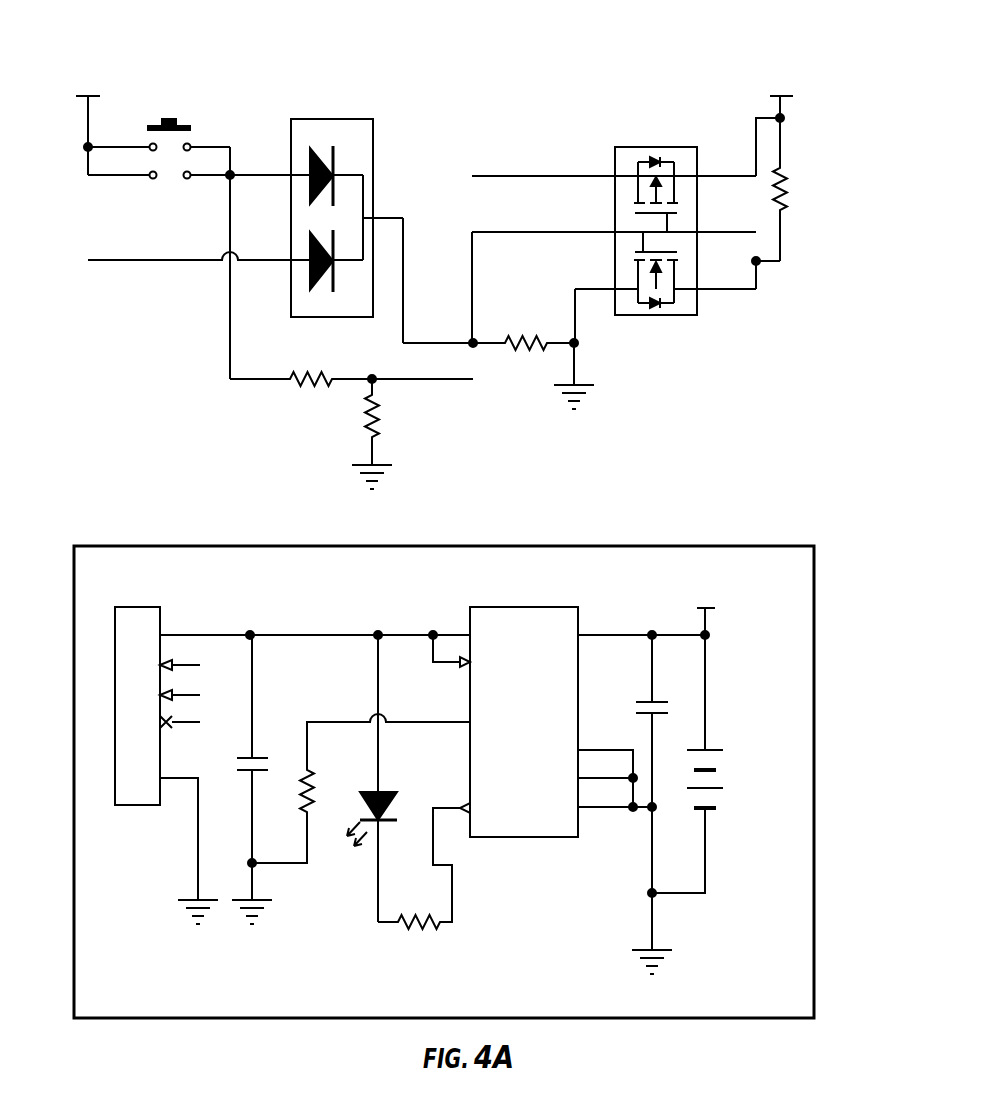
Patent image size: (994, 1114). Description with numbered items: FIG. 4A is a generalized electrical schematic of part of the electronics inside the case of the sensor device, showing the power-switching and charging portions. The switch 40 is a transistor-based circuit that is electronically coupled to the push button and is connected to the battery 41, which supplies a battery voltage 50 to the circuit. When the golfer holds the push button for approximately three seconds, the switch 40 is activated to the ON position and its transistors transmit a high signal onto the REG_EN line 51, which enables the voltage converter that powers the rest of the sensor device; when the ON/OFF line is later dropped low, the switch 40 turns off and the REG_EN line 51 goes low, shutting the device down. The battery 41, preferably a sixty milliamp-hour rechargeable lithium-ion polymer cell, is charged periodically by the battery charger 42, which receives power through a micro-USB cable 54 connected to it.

The switch 40 is at (137, 80).
The battery 41 is at (758, 764).
The battery charger 42 is at (74, 620).
The battery voltage 50 is at (72, 94).
The REG_EN line 51 is at (518, 178).
The micro-USB cable 54 is at (110, 878).